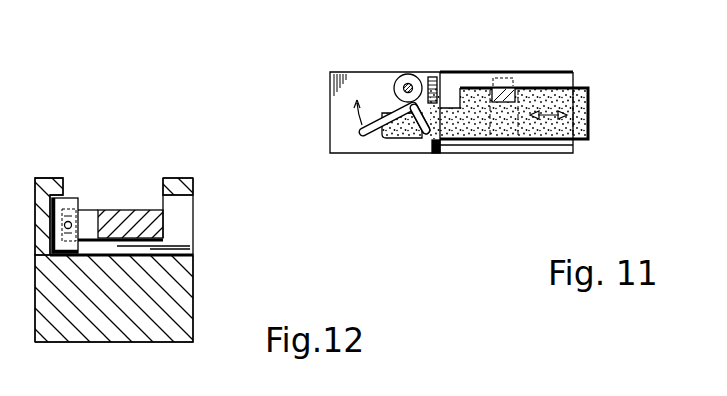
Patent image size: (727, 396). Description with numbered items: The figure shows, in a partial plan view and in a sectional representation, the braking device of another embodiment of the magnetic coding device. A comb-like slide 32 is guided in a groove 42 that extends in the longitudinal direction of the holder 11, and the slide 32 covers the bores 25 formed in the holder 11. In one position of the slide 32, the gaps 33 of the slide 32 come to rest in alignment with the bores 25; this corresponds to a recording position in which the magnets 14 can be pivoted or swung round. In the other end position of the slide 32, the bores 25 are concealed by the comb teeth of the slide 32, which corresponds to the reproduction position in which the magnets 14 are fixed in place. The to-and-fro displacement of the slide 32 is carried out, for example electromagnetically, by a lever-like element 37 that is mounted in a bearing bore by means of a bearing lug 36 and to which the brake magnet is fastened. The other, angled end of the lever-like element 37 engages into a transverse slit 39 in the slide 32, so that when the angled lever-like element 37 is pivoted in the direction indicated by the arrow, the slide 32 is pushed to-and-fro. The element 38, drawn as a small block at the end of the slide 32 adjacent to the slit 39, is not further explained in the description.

In FIG. 12, the holder 11 is at (187, 303).
In FIG. 11, the holder 11 is at (548, 148).
In FIG. 12, the magnets 14 is at (73, 198).
In FIG. 11, the magnets 14 is at (500, 86).
In FIG. 12, the bores 25 is at (183, 220).
In FIG. 11, the bores 25 is at (502, 147).
In FIG. 12, the comb-like slide 32 is at (122, 210).
In FIG. 11, the comb-like slide 32 is at (588, 98).
In FIG. 12, the gaps 33 is at (88, 210).
In FIG. 11, the bearing lug 36 is at (409, 75).
In FIG. 11, the lever-like element 37 is at (363, 136).
In FIG. 11, the stop block 38 is at (443, 152).
In FIG. 11, the transverse slit 39 is at (425, 135).
In FIG. 12, the groove 42 is at (162, 193).